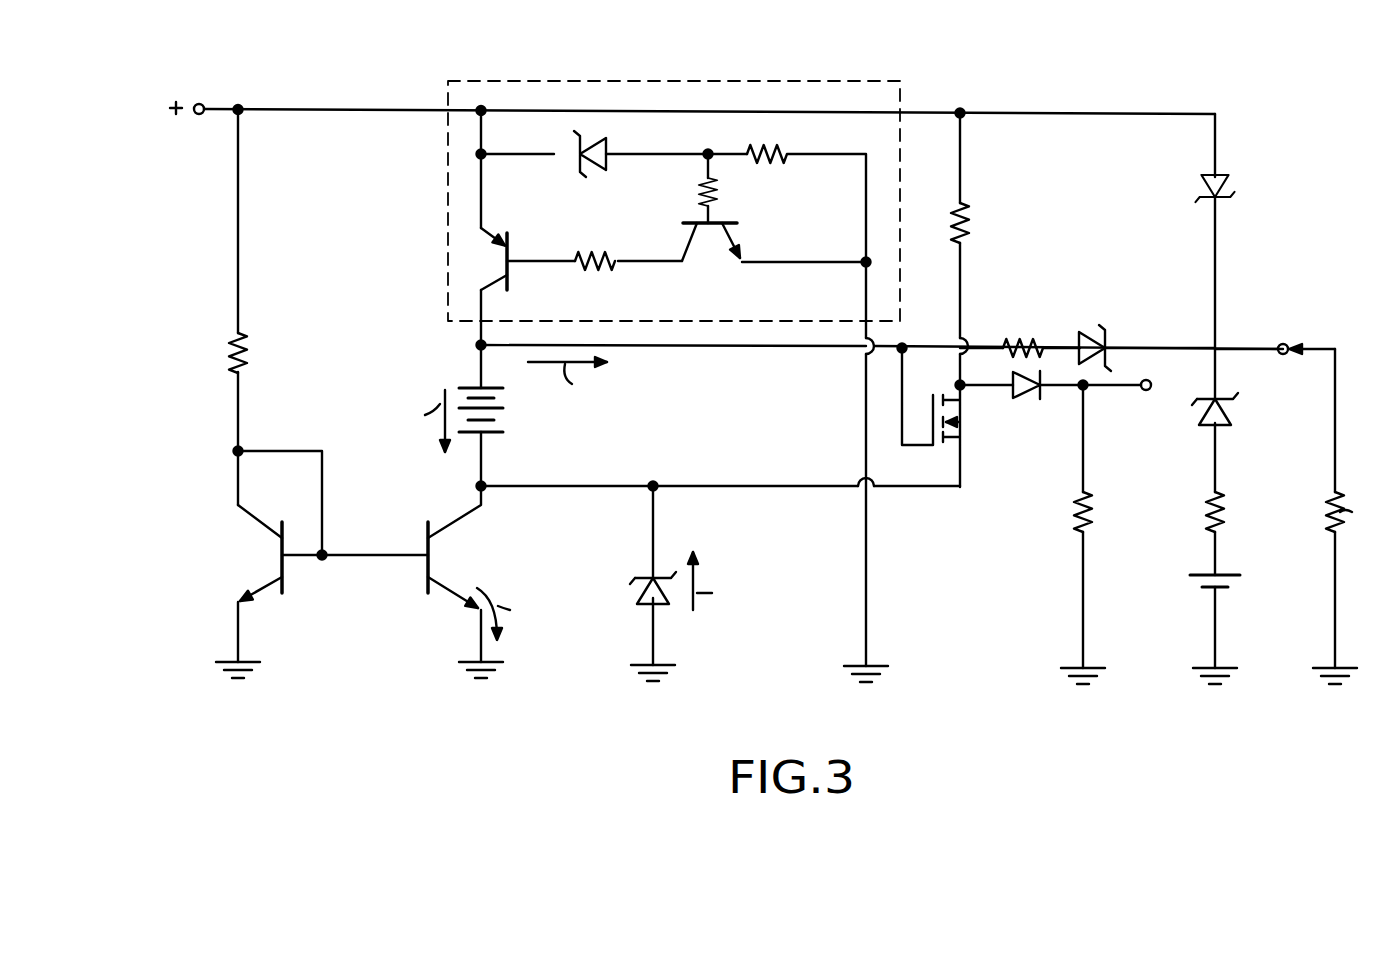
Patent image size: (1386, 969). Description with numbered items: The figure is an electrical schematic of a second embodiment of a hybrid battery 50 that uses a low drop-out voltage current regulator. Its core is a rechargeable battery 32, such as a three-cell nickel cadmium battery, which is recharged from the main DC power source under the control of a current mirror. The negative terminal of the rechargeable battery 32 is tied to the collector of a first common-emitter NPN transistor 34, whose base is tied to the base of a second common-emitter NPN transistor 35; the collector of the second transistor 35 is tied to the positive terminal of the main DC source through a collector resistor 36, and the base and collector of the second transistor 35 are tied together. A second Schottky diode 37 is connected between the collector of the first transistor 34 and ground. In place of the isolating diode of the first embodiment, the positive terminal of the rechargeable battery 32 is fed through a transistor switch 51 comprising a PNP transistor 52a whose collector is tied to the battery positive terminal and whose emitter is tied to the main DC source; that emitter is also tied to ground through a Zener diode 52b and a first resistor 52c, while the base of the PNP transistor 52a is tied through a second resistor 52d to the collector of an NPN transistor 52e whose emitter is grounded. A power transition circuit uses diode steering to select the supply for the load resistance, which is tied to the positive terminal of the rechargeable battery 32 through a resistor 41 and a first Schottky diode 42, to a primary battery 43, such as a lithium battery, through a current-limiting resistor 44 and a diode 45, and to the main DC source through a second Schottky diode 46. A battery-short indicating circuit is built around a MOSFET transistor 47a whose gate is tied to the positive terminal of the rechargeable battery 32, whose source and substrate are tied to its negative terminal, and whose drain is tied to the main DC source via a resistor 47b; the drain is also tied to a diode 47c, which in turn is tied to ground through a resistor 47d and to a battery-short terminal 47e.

The battery charging and discharging circuit 50 is at (1190, 80).
The transistor switch 51 is at (822, 82).
The PNP transistor 52a is at (490, 236).
The Zener diode 52b is at (602, 143).
The first resistor 52c is at (775, 150).
The second resistor 52d is at (618, 266).
The NPN transistor 52e is at (735, 250).
The rechargeable battery 32 is at (496, 426).
The first common-emitter NPN transistor 34 is at (462, 512).
The second common-emitter NPN transistor 35 is at (250, 516).
The collector resistor 36 is at (225, 356).
The second Schottky diode 37 is at (652, 575).
The resistor 41 is at (1010, 346).
The first Schottky diode 42 is at (1103, 330).
The primary battery 43 is at (1222, 577).
The current-limiting resistor 44 is at (1222, 508).
The diode 45 is at (1225, 411).
The second Schottky diode 46 is at (1228, 190).
The MOSFET transistor 47a is at (960, 438).
The resistor 47b is at (968, 230).
The diode 47c is at (1031, 398).
The resistor 47d is at (1077, 512).
The battery-short terminal 47e is at (1142, 392).